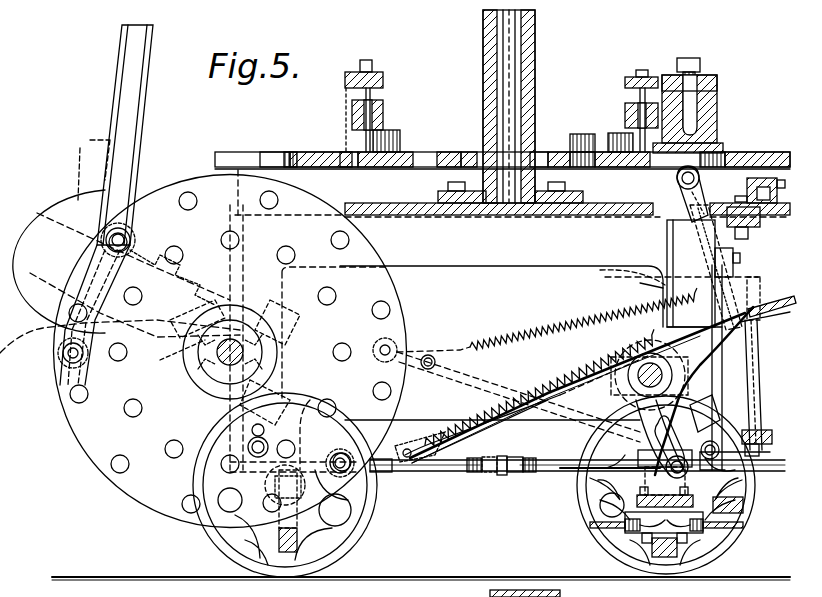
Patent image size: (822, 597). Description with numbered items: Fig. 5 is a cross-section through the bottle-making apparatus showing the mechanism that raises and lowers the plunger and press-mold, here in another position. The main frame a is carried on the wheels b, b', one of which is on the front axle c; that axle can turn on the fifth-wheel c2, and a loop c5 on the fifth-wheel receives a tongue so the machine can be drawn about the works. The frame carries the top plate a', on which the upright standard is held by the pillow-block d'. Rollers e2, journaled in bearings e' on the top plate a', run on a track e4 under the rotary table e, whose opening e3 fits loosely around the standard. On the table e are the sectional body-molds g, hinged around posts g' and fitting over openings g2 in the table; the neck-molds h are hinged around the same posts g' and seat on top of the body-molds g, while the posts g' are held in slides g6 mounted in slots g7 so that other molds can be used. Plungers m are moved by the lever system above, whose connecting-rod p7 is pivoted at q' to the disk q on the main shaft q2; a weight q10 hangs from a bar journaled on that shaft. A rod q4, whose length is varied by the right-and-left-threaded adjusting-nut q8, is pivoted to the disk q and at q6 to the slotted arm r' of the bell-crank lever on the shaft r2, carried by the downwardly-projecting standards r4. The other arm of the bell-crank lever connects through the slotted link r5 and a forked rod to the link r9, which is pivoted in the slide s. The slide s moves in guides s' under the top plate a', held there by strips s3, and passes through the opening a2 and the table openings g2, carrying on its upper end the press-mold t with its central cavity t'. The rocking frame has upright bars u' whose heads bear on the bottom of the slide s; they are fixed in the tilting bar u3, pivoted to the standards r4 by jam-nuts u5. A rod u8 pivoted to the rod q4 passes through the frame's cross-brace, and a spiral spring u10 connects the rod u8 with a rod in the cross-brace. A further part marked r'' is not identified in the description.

The connecting-rod p7 is at (124, 70).
The neck-molds h is at (352, 72).
The main frame a is at (501, 227).
The top plate a' is at (512, 222).
The opening in top plate a2 is at (660, 208).
The posts g' is at (505, 95).
The body-molds g is at (503, 125).
The openings in rotary table g2 is at (306, 158).
The slides g6 is at (392, 168).
The slots g7 is at (583, 152).
The rotary table e is at (502, 151).
The bearings e' is at (734, 197).
The wheels or rollers e2 is at (747, 180).
The opening in rotary table e3 is at (543, 152).
The track e4 is at (350, 168).
The pillow-block d' is at (513, 191).
The press-mold t is at (699, 109).
The cavity of press-mold t' is at (692, 134).
The plungers m is at (718, 90).
The slide s is at (560, 348).
The guides s' is at (632, 285).
The strips s3 is at (667, 248).
The link r9 is at (668, 225).
The slotted link r5 is at (768, 297).
The shaft r2 is at (618, 380).
The curved lever r'' is at (717, 391).
The downwardly-projecting standards r4 is at (740, 378).
The slotted arm of bell-crank lever r' is at (284, 533).
The upright bars u' is at (762, 385).
The tilting bar u3 is at (780, 448).
The jam-nuts u5 is at (763, 434).
The rod u8 is at (490, 420).
The spiral spring u10 is at (482, 398).
The disk q is at (327, 349).
The pivot q' is at (227, 294).
The main shaft q2 is at (230, 352).
The rod q4 is at (452, 472).
The pivot q6 is at (690, 475).
The adjusting-nut q8 is at (518, 473).
The weight q10 is at (120, 246).
The wheel b is at (662, 485).
The wheel b' is at (285, 485).
The front axle c is at (667, 557).
The fifth-wheel c2 is at (590, 524).
The loop c5 is at (745, 512).